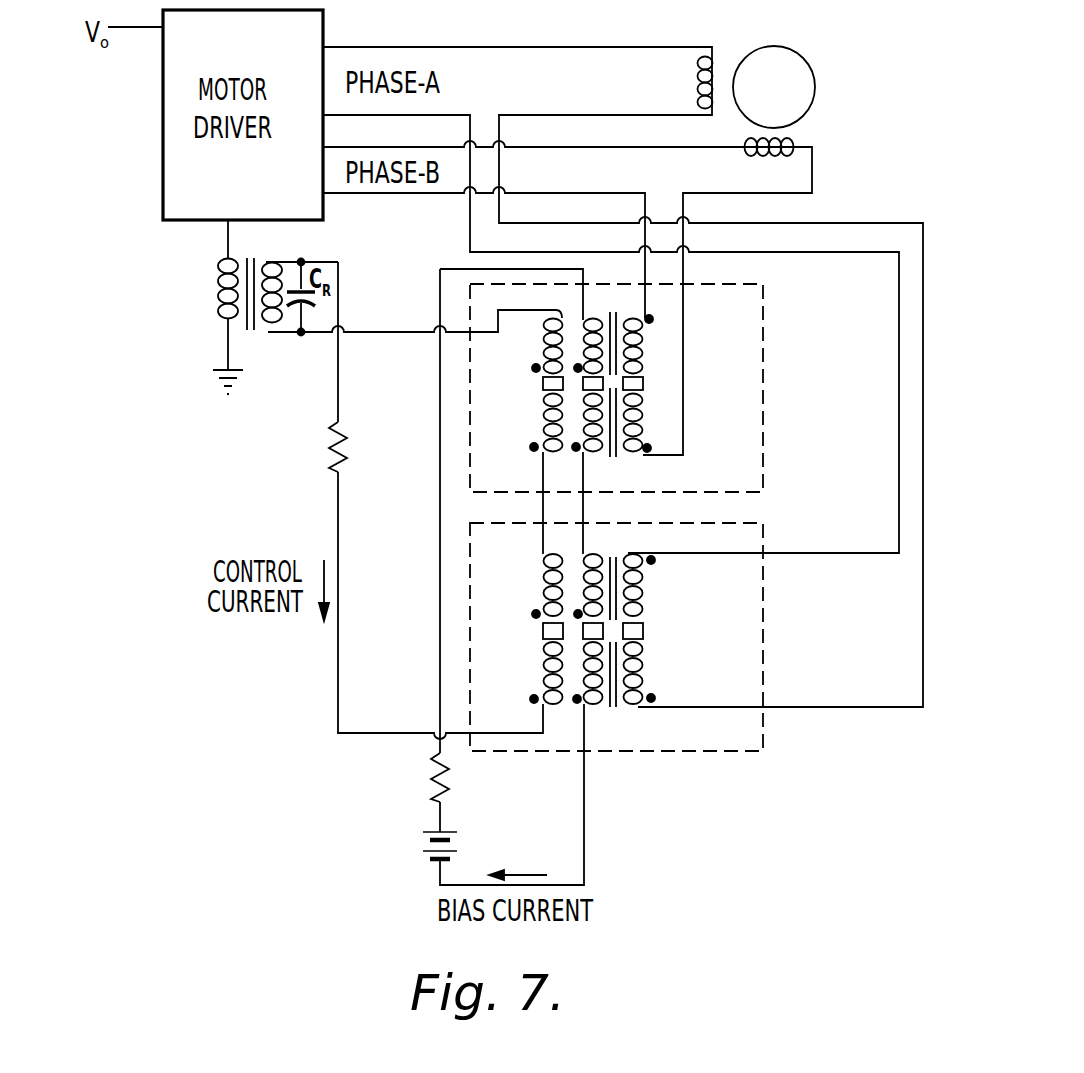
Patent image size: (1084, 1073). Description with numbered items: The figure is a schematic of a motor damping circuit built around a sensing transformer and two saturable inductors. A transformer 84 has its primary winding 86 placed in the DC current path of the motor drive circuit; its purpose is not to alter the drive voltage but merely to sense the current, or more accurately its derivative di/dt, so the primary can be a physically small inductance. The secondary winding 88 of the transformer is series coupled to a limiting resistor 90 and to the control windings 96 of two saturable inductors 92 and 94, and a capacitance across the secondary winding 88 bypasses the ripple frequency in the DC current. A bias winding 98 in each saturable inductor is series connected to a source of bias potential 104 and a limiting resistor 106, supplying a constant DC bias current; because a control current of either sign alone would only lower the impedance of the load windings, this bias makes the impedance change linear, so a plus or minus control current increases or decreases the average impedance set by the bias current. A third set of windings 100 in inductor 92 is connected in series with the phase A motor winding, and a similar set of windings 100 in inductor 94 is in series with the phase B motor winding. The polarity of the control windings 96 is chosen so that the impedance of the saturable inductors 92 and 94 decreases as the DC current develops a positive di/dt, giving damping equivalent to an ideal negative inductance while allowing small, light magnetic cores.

The transformer 84 is at (231, 307).
The primary winding 86 is at (220, 287).
The secondary winding 88 is at (280, 276).
The limiting resistor 90 is at (348, 443).
The saturable inductor 92 is at (766, 596).
The saturable inductor 94 is at (766, 314).
The control windings 96 is at (540, 378).
The bias winding 98 is at (573, 380).
The third set of windings 100 is at (646, 383).
The source of bias potential 104 is at (450, 832).
The limiting resistor 106 is at (432, 767).